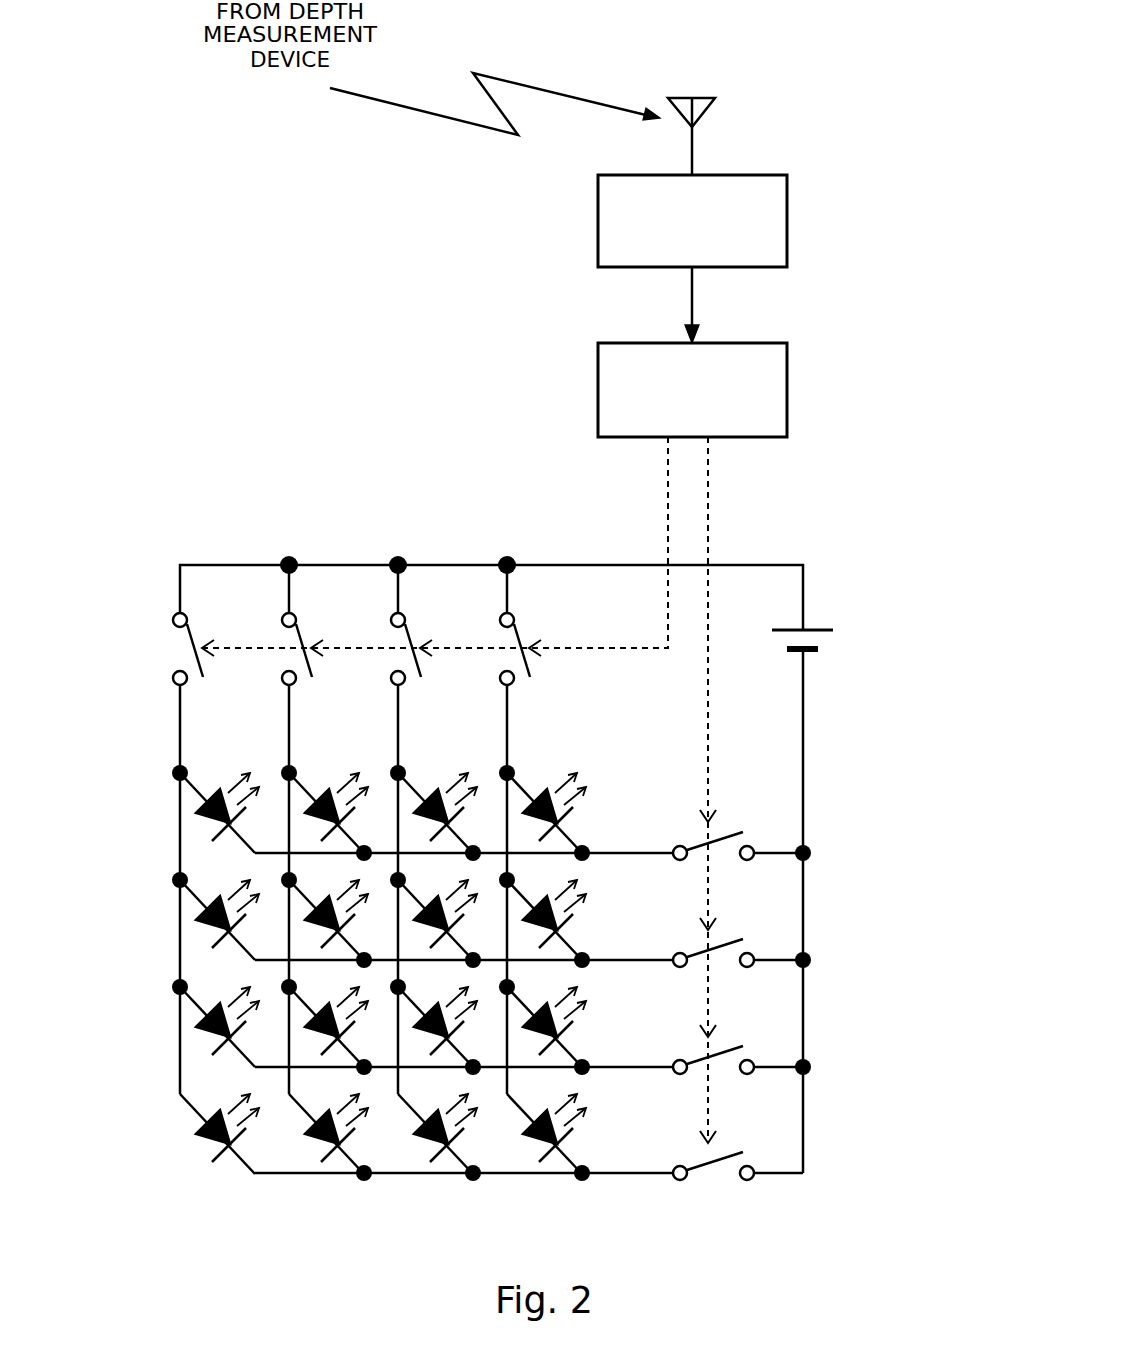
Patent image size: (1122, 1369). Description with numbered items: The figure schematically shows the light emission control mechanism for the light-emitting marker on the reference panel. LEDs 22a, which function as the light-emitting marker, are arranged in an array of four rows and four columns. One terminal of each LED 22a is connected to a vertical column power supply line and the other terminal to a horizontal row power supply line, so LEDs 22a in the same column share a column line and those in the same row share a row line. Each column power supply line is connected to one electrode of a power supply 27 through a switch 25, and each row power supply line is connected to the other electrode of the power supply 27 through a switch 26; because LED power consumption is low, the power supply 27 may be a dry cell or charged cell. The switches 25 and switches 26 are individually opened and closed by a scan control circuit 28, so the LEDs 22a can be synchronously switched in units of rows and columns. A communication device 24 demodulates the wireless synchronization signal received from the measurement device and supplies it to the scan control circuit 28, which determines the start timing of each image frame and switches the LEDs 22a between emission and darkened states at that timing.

The communication device 24 is at (787, 222).
The scan control circuit 28 is at (787, 390).
The switch 25 is at (194, 632).
The switch 26 is at (730, 828).
The power supply 27 is at (815, 630).
The LED 22a is at (203, 1135).